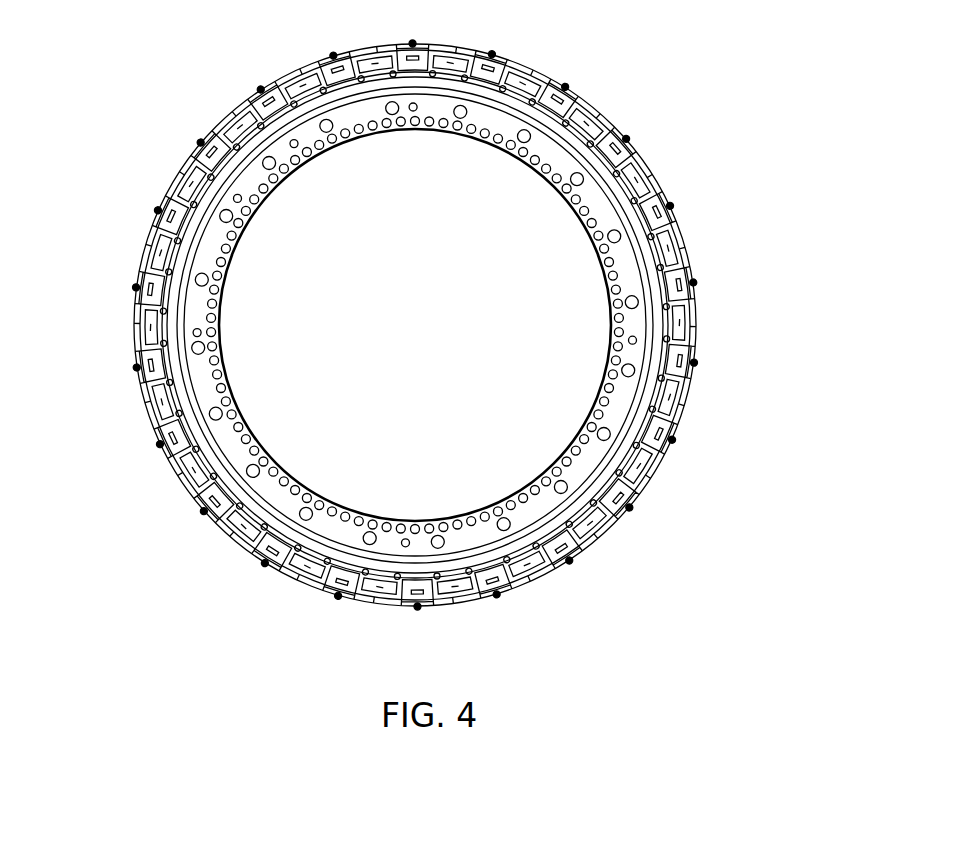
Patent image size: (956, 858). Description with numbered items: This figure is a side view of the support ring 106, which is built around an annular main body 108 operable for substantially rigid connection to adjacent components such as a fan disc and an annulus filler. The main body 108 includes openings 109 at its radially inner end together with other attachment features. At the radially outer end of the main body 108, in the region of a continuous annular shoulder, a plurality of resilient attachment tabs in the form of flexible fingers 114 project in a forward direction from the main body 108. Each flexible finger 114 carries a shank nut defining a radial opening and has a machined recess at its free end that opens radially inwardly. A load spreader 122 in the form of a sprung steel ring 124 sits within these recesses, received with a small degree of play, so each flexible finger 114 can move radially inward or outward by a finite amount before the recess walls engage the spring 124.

The support ring 106 is at (716, 233).
The annular main body 108 is at (596, 190).
The openings 109 is at (527, 131).
The flexible fingers 114 is at (150, 397).
The load spreader 122 is at (300, 70).
The sprung steel ring 124 is at (380, 58).